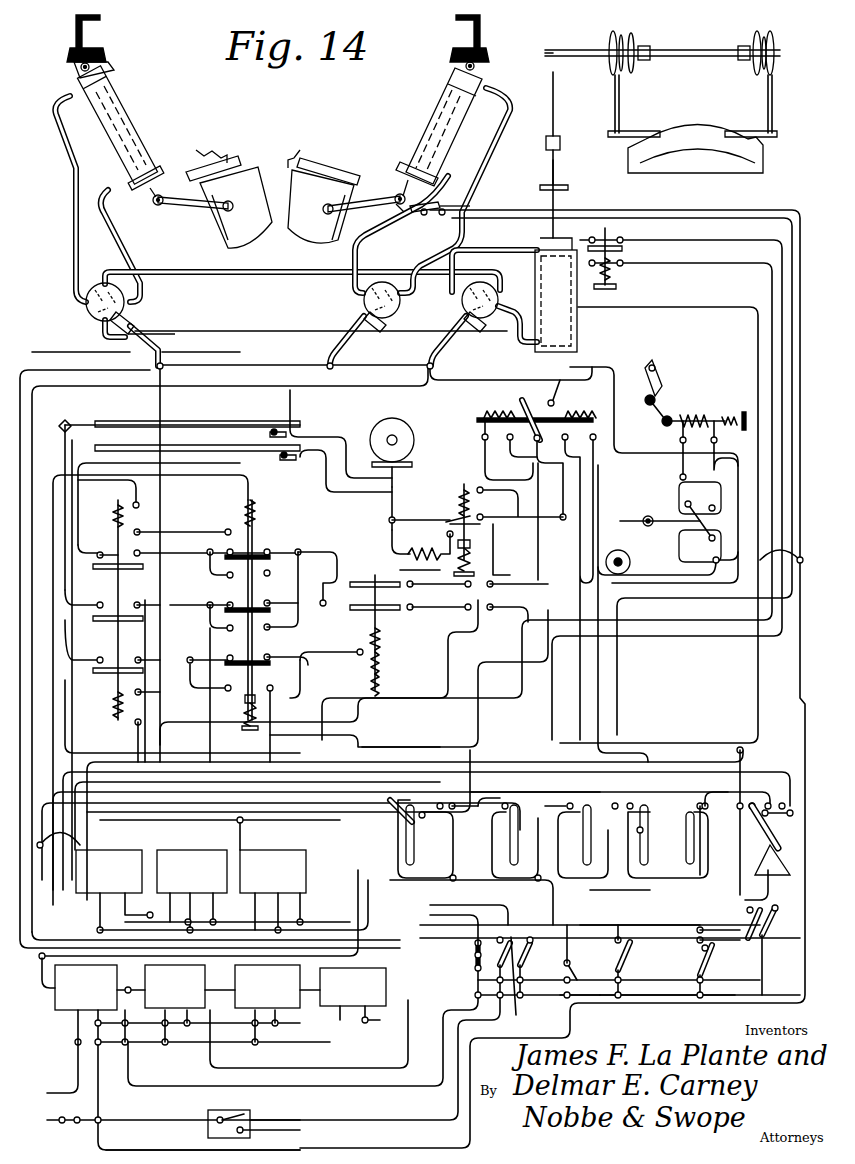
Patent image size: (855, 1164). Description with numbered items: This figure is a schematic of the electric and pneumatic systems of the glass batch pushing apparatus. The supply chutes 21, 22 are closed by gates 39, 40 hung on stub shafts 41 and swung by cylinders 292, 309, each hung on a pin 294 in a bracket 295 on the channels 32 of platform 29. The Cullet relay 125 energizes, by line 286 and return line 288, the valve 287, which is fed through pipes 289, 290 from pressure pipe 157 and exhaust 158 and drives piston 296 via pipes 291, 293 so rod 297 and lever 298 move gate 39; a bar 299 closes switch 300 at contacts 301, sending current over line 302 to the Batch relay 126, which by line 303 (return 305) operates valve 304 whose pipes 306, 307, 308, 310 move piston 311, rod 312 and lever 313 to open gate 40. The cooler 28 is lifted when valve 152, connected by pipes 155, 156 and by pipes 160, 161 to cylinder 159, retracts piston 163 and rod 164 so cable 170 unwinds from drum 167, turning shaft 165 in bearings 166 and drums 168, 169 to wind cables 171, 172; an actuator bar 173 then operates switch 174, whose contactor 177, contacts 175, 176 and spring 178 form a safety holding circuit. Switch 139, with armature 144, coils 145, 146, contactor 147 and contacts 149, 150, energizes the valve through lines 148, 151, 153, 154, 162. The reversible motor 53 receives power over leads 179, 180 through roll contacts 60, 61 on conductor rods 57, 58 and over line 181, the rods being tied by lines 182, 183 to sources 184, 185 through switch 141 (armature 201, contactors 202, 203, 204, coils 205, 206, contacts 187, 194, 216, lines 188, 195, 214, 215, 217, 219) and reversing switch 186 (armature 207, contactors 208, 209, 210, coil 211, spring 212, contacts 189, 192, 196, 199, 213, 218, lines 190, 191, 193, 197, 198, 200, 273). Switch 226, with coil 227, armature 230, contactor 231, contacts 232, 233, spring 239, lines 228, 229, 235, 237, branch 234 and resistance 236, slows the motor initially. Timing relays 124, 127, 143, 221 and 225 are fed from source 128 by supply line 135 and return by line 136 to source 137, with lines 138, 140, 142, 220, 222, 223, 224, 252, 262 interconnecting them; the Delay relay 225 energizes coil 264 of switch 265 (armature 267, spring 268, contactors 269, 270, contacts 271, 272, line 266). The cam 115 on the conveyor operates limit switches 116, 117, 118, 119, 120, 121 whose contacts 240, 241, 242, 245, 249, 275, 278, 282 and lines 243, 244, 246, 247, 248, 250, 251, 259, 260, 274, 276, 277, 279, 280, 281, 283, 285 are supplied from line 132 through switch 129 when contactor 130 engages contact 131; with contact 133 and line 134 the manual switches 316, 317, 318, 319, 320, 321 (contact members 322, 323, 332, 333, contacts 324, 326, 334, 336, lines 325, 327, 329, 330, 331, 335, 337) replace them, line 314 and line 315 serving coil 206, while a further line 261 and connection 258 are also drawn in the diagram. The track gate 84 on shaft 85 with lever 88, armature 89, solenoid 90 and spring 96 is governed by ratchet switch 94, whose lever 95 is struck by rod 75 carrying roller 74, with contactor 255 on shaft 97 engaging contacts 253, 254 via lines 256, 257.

The supply chute 21 is at (310, 164).
The supply chute 22 is at (240, 162).
The cooler 28 is at (692, 144).
The platform 29 is at (490, 37).
The understructure channels 32 is at (466, 33).
The gate 39 is at (321, 217).
The gate 40 is at (236, 215).
The stub shafts 41 is at (332, 207).
The reversible motor 53 is at (408, 436).
The conductor rod 57 is at (197, 455).
The conductor rod 58 is at (208, 424).
The roll-type contacts 60 is at (273, 463).
The roll-type contacts 61 is at (260, 438).
The roller 74 is at (616, 552).
The rod 75 is at (632, 552).
The switch-frog or gate 84 is at (658, 372).
The shaft 85 is at (638, 393).
The lever 88 is at (651, 421).
The armature 89 is at (675, 416).
The solenoid 90 is at (698, 416).
The ratchet-type switch 94 is at (682, 516).
The actuating lever 95 is at (660, 512).
The spring 96 is at (737, 415).
The shaft 97 is at (664, 538).
The cam or control member 115 is at (774, 877).
The double-action switch 116 is at (763, 853).
The switch 117 is at (664, 553).
The switch 118 is at (668, 841).
The switch 119 is at (584, 841).
The switch 120 is at (530, 835).
The switch 121 is at (412, 848).
The Clock timing relay 124 is at (68, 992).
The Cullet timing relay 125 is at (176, 994).
The Batch timing relay 126 is at (269, 994).
The Pusher timing relay 127 is at (345, 997).
The source line 128 is at (99, 1130).
The manual control switch 129 is at (209, 1119).
The movable contactor 130 is at (239, 1107).
The contact 131 is at (275, 1112).
The supply line 132 is at (399, 1028).
The contact 133 is at (268, 1138).
The line 134 is at (453, 1068).
The supply line 135 is at (433, 667).
The line 136 is at (212, 972).
The opposite source 137 is at (56, 1051).
The line 138 is at (364, 592).
The double-action solenoid-type switch 139 is at (480, 407).
The branch line 140 is at (208, 919).
The double-action solenoid-type switch 141 is at (102, 634).
The branch line 142 is at (74, 835).
The auxiliary timing relay 143 is at (114, 840).
The armature 144 is at (579, 402).
The coil 145 is at (519, 431).
The coil 146 is at (597, 405).
The contactor 147 is at (541, 410).
The line 148 is at (593, 515).
The contact 149 is at (504, 398).
The contact 150 is at (577, 382).
The line 151 is at (487, 378).
The solenoid-actuated valve 152 is at (458, 301).
The line 153 is at (508, 361).
The line 154 is at (232, 551).
The pipe 155 is at (492, 322).
The pipe 156 is at (511, 285).
The pressure pipe 157 is at (321, 346).
The exhaust pipe 158 is at (362, 276).
The cylinder 159 is at (570, 332).
The pipe 160 is at (509, 237).
The pipe 161 is at (509, 353).
The line 162 is at (614, 541).
The piston 163 is at (567, 234).
The piston rod 164 is at (559, 199).
The shaft 165 is at (662, 41).
The bearings 166 is at (693, 66).
The drum 167 is at (598, 50).
The drum 168 is at (647, 49).
The drum 169 is at (751, 43).
The cable 170 is at (573, 104).
The cable 171 is at (634, 106).
The cable 172 is at (748, 106).
The switch actuator bar 173 is at (569, 163).
The double contact switch 174 is at (650, 284).
The fixed contacts 175 is at (622, 252).
The fixed contacts 176 is at (627, 269).
The movable contactor 177 is at (627, 252).
The compression spring 178 is at (622, 292).
The lead 179 is at (340, 471).
The lead 180 is at (337, 437).
The line 181 is at (502, 549).
The line 182 is at (159, 501).
The line 183 is at (70, 496).
The source 184 is at (480, 592).
The source 185 is at (470, 611).
The switch 186 is at (280, 638).
The fixed contacts 187 is at (98, 545).
The line 188 is at (198, 564).
The fixed contacts 189 is at (217, 545).
The line 190 is at (318, 566).
The branch 191 is at (199, 583).
The fixed contacts 192 is at (224, 582).
The line 193 is at (335, 581).
The fixed contacts 194 is at (102, 594).
The line 195 is at (201, 611).
The fixed contacts 196 is at (281, 599).
The line 197 is at (317, 617).
The branch 198 is at (203, 623).
The fixed contacts 199 is at (261, 591).
The line 200 is at (281, 565).
The armature 201 is at (144, 681).
The contactor 202 is at (126, 575).
The contactor 203 is at (98, 620).
The contactor 204 is at (111, 681).
The coil 205 is at (101, 706).
The coil 206 is at (109, 518).
The armature 207 is at (241, 645).
The contactor 208 is at (269, 610).
The contactor 209 is at (256, 574).
The contactor 210 is at (205, 650).
The coil 211 is at (268, 513).
The spring 212 is at (231, 712).
The contacts 213 is at (286, 651).
The line 214 is at (217, 867).
The line 215 is at (144, 725).
The contacts 216 is at (88, 641).
The line 217 is at (182, 716).
The contacts 218 is at (219, 695).
The line 219 is at (197, 682).
The lead 220 is at (221, 838).
The cooler timing relay 221 is at (129, 891).
The line 222 is at (439, 523).
The line 223 is at (418, 603).
The line 224 is at (281, 845).
The Delay timing relay 225 is at (231, 891).
The spring-biased solenoid switch 226 is at (439, 460).
The coil 227 is at (466, 510).
The line 228 is at (319, 668).
The line 229 is at (539, 516).
The armature 230 is at (477, 520).
The movable contactor 231 is at (502, 530).
The contact 232 is at (431, 500).
The contact 233 is at (442, 527).
The branch 234 is at (412, 508).
The line 235 is at (417, 552).
The adjustable resistance 236 is at (405, 550).
The line 237 is at (381, 541).
The spring 239 is at (474, 558).
The contacts 240 is at (747, 787).
The contacts 241 is at (760, 799).
The contacts 242 is at (426, 835).
The line 243 is at (411, 829).
The line 244 is at (416, 672).
The contacts 245 is at (719, 789).
The lead 246 is at (682, 843).
The line 247 is at (424, 991).
The line 248 is at (466, 902).
The contacts 249 is at (390, 815).
The line 250 is at (262, 735).
The line 251 is at (545, 501).
The line 252 is at (660, 490).
The fixed contacts 253 is at (700, 546).
The fixed contacts 254 is at (700, 498).
The rotatable contactor 255 is at (721, 517).
The line 256 is at (700, 562).
The line 257 is at (709, 466).
The wire 258 is at (718, 437).
The line 259 is at (435, 867).
The branch 260 is at (289, 840).
The wire 261 is at (269, 840).
The service line 262 is at (332, 687).
The coil 264 is at (398, 633).
The double-contactor switch 265 is at (374, 571).
The line 266 is at (439, 635).
The armature 267 is at (407, 660).
The spring 268 is at (407, 679).
The contactor 269 is at (425, 570).
The contactor 270 is at (434, 595).
The contact 271 is at (375, 594).
The contact 272 is at (375, 614).
The line 273 is at (184, 522).
The line 274 is at (438, 741).
The contacts 275 is at (512, 805).
The line 276 is at (521, 846).
The line 277 is at (342, 936).
The contacts 278 is at (573, 805).
The line 279 is at (574, 875).
The line 280 is at (467, 951).
The line 281 is at (634, 910).
The contacts 282 is at (631, 805).
The line 283 is at (609, 610).
The branch 285 is at (345, 962).
The line 286 is at (231, 645).
The self-reversing solenoid-type valve 287 is at (327, 312).
The line 288 is at (299, 350).
The pipe 289 is at (394, 322).
The pipe 290 is at (384, 283).
The pipe 291 is at (469, 227).
The cylinder 292 is at (438, 114).
The pipe 293 is at (391, 224).
The pin 294 is at (278, 65).
The bracket 295 is at (278, 56).
The piston 296 is at (446, 92).
The rod 297 is at (418, 148).
The lever 298 is at (387, 216).
The bar 299 is at (385, 181).
The switch 300 is at (421, 217).
The contacts 301 is at (471, 199).
The line 302 is at (503, 592).
The line 303 is at (210, 646).
The self-reversible solenoid-type valve 304 is at (85, 308).
The line 305 is at (143, 321).
The pipe 306 is at (89, 338).
The pipe 307 is at (104, 258).
The pipe 308 is at (70, 224).
The cylinder 309 is at (122, 125).
The pipe 310 is at (130, 228).
The piston 311 is at (116, 82).
The rod 312 is at (154, 164).
The lever 313 is at (174, 211).
The line 314 is at (740, 770).
The line 315 is at (142, 610).
The manually operable switch 316 is at (459, 970).
The manually operable switch 317 is at (617, 989).
The manually operable switch 318 is at (558, 952).
The manually operable switch 319 is at (609, 960).
The manually operable switch 320 is at (724, 970).
The manually operable switch 321 is at (767, 940).
The movable contact member 322 is at (459, 956).
The movable contact member 323 is at (521, 985).
The contact 324 is at (459, 960).
The line 325 is at (610, 917).
The contact 326 is at (496, 966).
The line 327 is at (457, 800).
The line 329 is at (539, 963).
The line 330 is at (620, 885).
The line 331 is at (670, 937).
The contactor member 332 is at (719, 929).
The contactor member 333 is at (785, 965).
The contact 334 is at (774, 915).
The shunt line 335 is at (774, 892).
The contact 336 is at (724, 912).
The line 337 is at (731, 902).